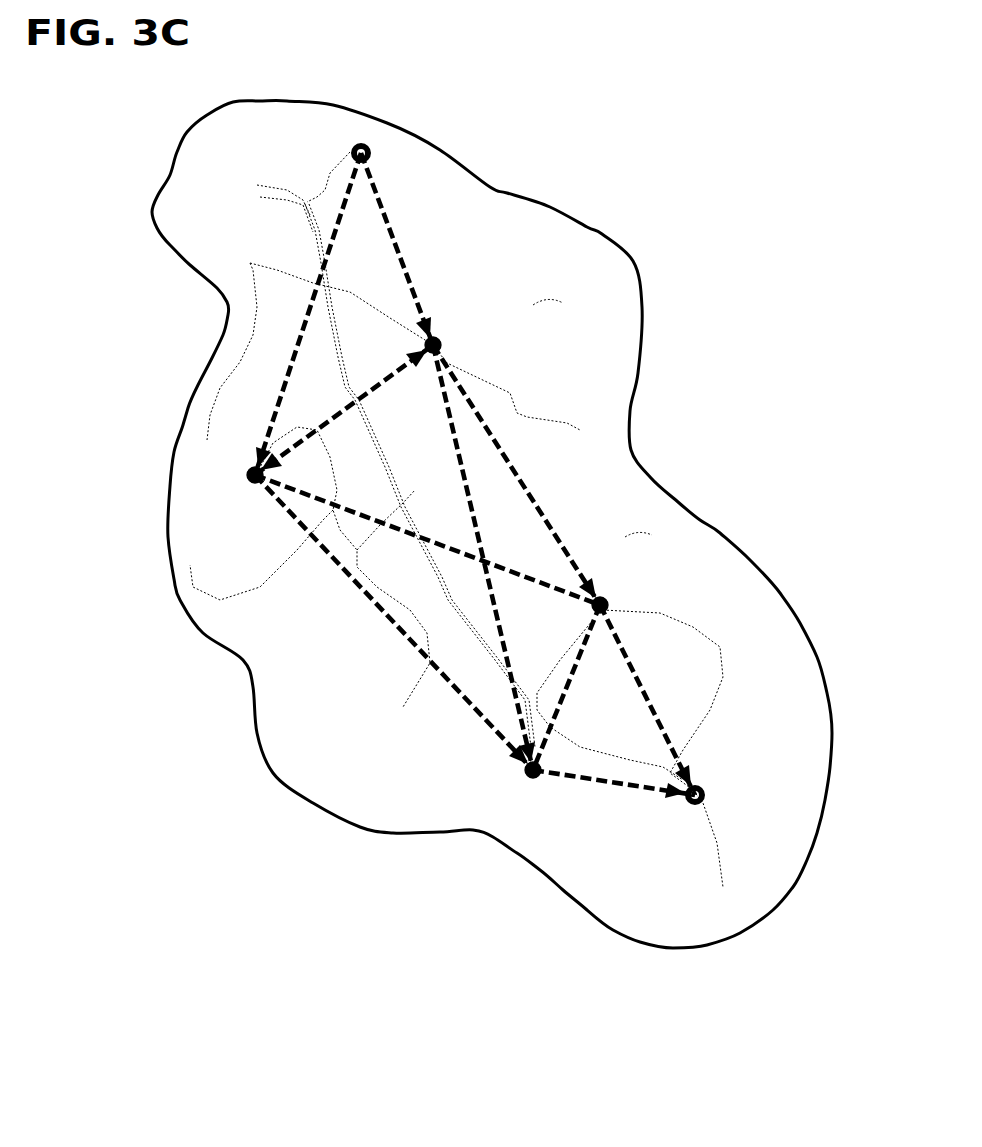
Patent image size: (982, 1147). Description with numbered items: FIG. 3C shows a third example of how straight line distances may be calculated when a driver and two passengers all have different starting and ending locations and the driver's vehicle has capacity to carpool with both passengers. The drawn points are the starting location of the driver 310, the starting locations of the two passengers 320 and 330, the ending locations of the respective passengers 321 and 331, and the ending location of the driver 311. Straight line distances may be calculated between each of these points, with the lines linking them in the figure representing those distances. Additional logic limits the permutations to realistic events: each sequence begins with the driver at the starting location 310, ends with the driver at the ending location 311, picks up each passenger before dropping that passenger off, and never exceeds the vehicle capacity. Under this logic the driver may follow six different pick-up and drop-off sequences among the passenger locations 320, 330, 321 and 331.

The starting location of the driver 310 is at (283, 181).
The ending location of the driver 311 is at (745, 844).
The starting location of the first passenger 320 is at (571, 360).
The ending location of the first passenger 321 is at (708, 579).
The starting location of the second passenger 330 is at (228, 531).
The ending location of the second passenger 331 is at (570, 838).